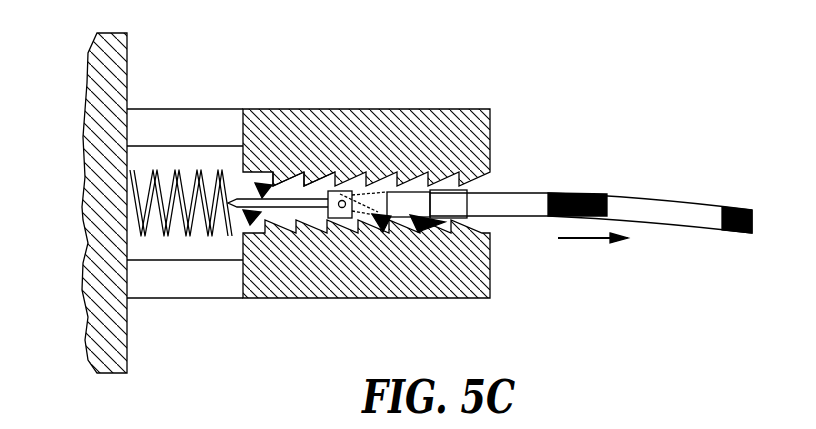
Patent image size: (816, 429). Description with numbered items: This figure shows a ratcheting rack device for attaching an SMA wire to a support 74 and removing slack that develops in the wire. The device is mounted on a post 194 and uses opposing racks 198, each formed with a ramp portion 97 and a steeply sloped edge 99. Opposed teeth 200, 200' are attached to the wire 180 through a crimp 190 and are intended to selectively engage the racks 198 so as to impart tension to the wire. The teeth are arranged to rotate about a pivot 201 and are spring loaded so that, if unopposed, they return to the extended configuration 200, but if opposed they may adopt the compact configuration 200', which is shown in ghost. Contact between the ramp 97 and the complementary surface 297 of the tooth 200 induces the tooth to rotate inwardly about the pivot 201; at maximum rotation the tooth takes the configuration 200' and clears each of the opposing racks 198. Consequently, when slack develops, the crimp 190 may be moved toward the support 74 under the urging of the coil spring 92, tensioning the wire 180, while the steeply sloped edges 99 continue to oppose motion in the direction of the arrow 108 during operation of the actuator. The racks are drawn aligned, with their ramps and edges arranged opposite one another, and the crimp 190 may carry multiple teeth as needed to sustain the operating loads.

The support 74 is at (88, 138).
The spring 92 is at (187, 237).
The ramp portion 97 is at (275, 186).
The steeply sloped edge 99 is at (305, 180).
The arrow 108 is at (595, 240).
The wire 180 is at (640, 198).
The crimp 190 is at (430, 187).
The post 194 is at (390, 135).
The racks 198 is at (262, 197).
The tooth 200 is at (374, 280).
The tooth in compact configuration 200' is at (279, 260).
The pivot 201 is at (346, 208).
The complementary surface 297 is at (397, 225).